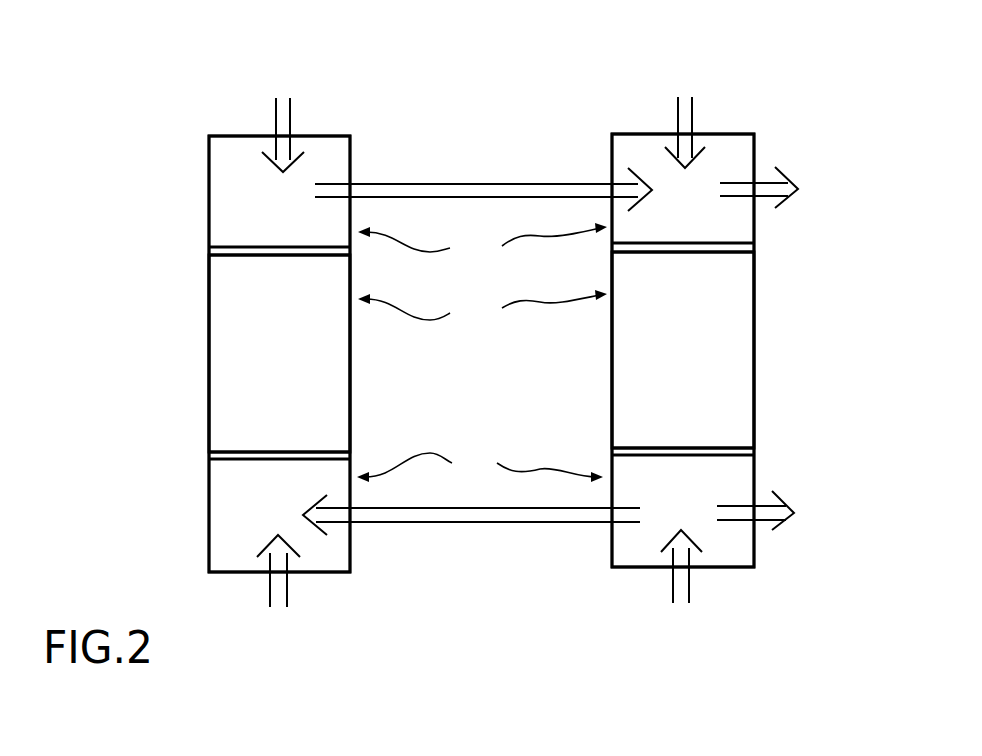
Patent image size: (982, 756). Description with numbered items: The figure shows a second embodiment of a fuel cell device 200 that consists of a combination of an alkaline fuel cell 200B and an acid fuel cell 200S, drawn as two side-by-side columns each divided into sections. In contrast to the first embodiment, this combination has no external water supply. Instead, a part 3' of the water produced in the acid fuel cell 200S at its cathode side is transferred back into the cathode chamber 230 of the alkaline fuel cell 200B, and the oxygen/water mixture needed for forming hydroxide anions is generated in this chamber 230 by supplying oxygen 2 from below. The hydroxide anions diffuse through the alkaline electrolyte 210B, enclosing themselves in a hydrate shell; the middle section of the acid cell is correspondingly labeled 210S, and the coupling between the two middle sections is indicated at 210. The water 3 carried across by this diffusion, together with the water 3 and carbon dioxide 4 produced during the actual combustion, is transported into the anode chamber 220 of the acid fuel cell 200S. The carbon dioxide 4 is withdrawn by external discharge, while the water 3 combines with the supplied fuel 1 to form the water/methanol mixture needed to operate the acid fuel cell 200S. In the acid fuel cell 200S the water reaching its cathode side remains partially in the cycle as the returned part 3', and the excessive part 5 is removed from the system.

The fuel cell device 200 is at (513, 78).
The alkaline fuel cell 200B is at (172, 112).
The acid fuel cell 200S is at (787, 108).
The alkaline electrolyte 210B is at (308, 363).
The middle section of second column 210S is at (712, 359).
The thermal coupling between middle sections 210 is at (482, 309).
The anode chamber 220 is at (482, 241).
The cathode chamber 230 is at (480, 465).
The fuel 1 is at (483, 116).
The oxygen 2 is at (479, 584).
The water 3 is at (483, 179).
The part of the water 3' is at (471, 525).
The carbon dioxide 4 is at (771, 187).
The excessive part of the water 5 is at (769, 510).